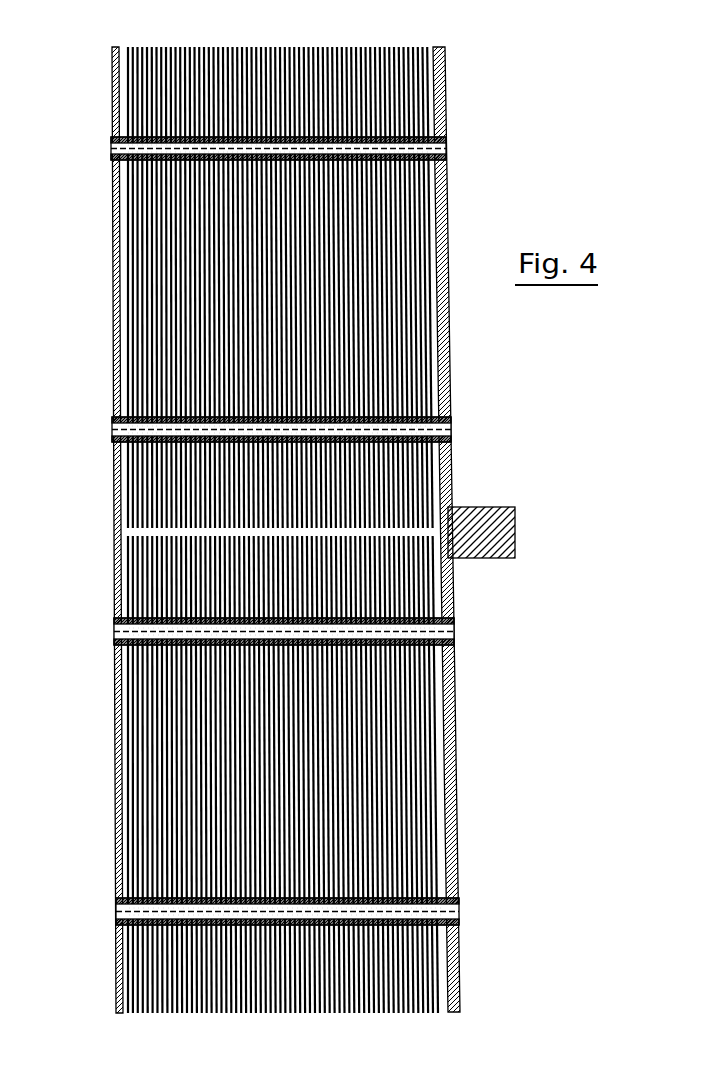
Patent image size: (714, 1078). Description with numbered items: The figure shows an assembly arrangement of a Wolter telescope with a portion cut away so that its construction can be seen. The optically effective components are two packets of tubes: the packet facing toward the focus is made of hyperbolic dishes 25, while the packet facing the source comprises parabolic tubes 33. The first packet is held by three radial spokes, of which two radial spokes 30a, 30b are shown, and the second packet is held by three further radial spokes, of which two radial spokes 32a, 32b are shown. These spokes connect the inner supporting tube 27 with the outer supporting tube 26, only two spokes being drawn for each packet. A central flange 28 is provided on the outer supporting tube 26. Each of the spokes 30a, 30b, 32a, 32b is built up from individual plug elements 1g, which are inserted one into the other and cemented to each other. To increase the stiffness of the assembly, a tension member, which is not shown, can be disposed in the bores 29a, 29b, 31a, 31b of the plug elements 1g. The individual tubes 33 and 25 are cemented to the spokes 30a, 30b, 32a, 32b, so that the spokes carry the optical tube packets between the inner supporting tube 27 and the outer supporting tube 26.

The plug element 1g is at (277, 153).
The hyperbolic dishes 25 is at (405, 46).
The outer supporting tube 26 is at (449, 364).
The inner supporting tube 27 is at (115, 312).
The central flange 28 is at (514, 531).
The bore 29a is at (277, 164).
The bore 29b is at (277, 438).
The radial spoke 30a is at (440, 156).
The radial spoke 30b is at (450, 437).
The bore 31a is at (279, 632).
The bore 31b is at (292, 922).
The radial spoke 32a is at (454, 640).
The radial spoke 32b is at (459, 920).
The parabolic tubes 33 is at (425, 1017).